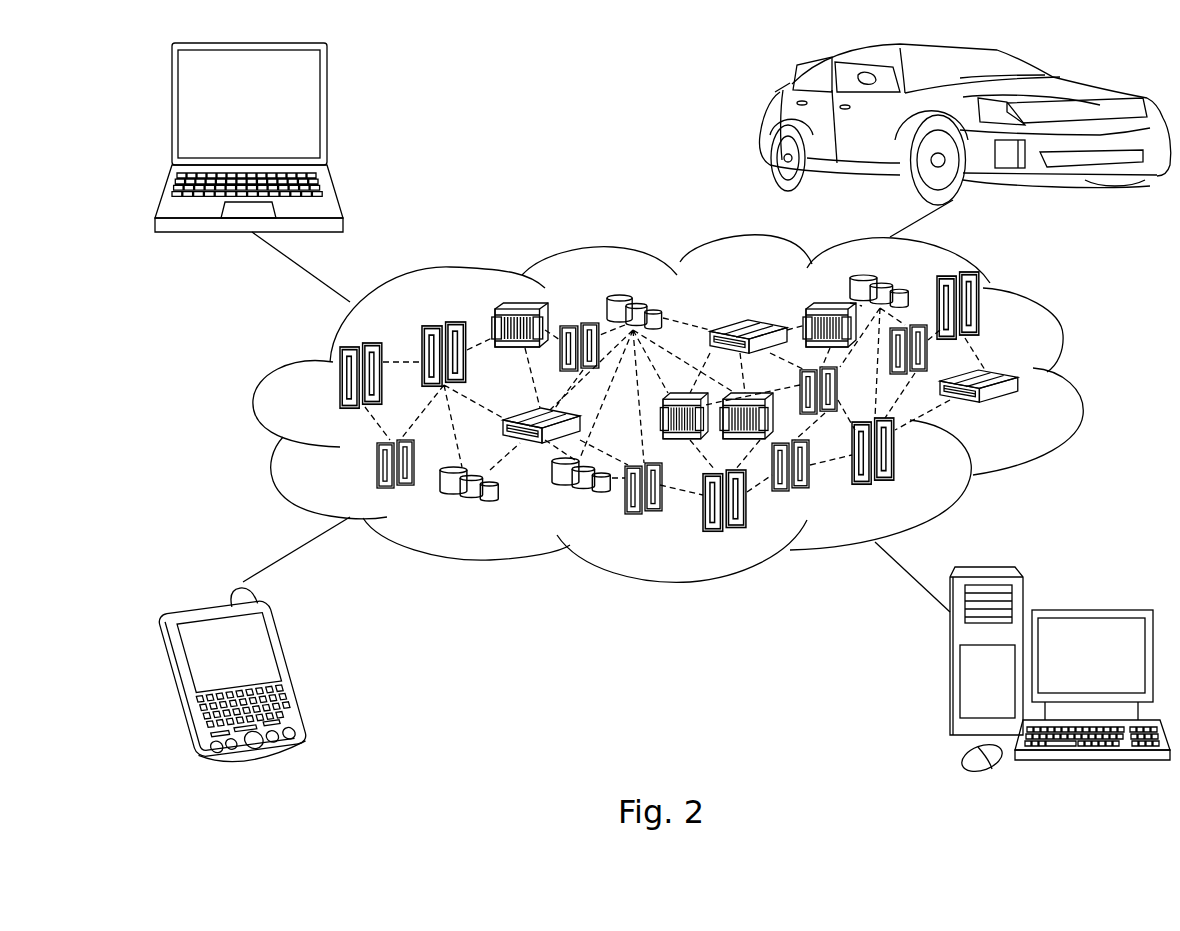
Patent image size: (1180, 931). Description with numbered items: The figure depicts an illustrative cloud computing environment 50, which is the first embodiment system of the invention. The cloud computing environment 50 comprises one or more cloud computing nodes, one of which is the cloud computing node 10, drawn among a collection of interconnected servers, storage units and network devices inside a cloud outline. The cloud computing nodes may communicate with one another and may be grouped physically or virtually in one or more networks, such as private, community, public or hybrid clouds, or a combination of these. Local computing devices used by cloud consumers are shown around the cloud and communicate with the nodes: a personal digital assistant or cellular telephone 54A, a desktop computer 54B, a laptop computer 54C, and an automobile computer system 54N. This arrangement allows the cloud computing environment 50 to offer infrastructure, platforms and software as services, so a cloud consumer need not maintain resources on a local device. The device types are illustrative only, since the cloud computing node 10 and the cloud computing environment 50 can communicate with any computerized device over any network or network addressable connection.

The cloud computing node 10 is at (1027, 413).
The cloud computing environment 50 is at (1082, 393).
The personal digital assistant (PDA) or cellular telephone 54A is at (297, 677).
The desktop computer 54B is at (950, 707).
The laptop computer 54C is at (343, 133).
The automobile computer system 54N is at (767, 122).